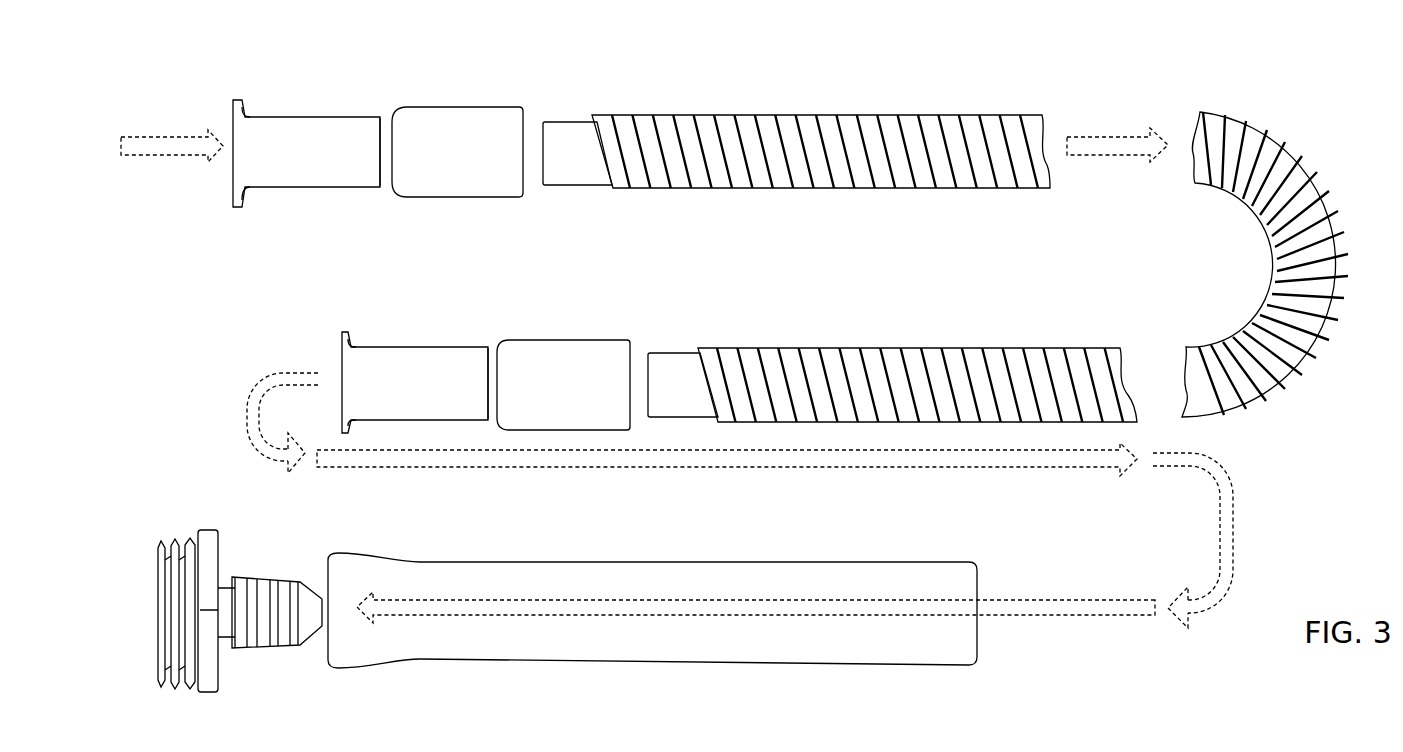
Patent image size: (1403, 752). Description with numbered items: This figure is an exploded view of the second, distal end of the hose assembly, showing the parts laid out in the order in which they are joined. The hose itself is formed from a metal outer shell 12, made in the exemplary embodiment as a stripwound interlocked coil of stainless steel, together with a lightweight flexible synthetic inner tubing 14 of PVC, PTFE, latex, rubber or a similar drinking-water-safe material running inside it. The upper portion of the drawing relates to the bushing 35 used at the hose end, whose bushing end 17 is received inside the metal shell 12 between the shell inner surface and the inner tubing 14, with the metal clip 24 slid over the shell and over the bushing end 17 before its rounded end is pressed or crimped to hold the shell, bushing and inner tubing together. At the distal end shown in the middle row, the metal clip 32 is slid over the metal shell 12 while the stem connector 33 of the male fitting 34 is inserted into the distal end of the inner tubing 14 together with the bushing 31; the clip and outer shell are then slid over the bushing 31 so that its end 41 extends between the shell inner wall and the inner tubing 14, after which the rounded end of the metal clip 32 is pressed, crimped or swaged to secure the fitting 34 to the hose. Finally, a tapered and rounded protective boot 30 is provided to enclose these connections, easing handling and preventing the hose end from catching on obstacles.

The metal outer shell 12 is at (710, 125).
The flexible synthetic inner tubing 14 is at (558, 128).
The bushing end 17 is at (378, 135).
The metal clip 24 is at (455, 125).
The protective boot 30 is at (452, 578).
The bushing 31 is at (377, 378).
The metal clip 32 is at (565, 360).
The stem connector 33 is at (288, 595).
The male fitting 34 is at (207, 560).
The bushing 35 is at (302, 132).
The bushing end 41 is at (483, 362).